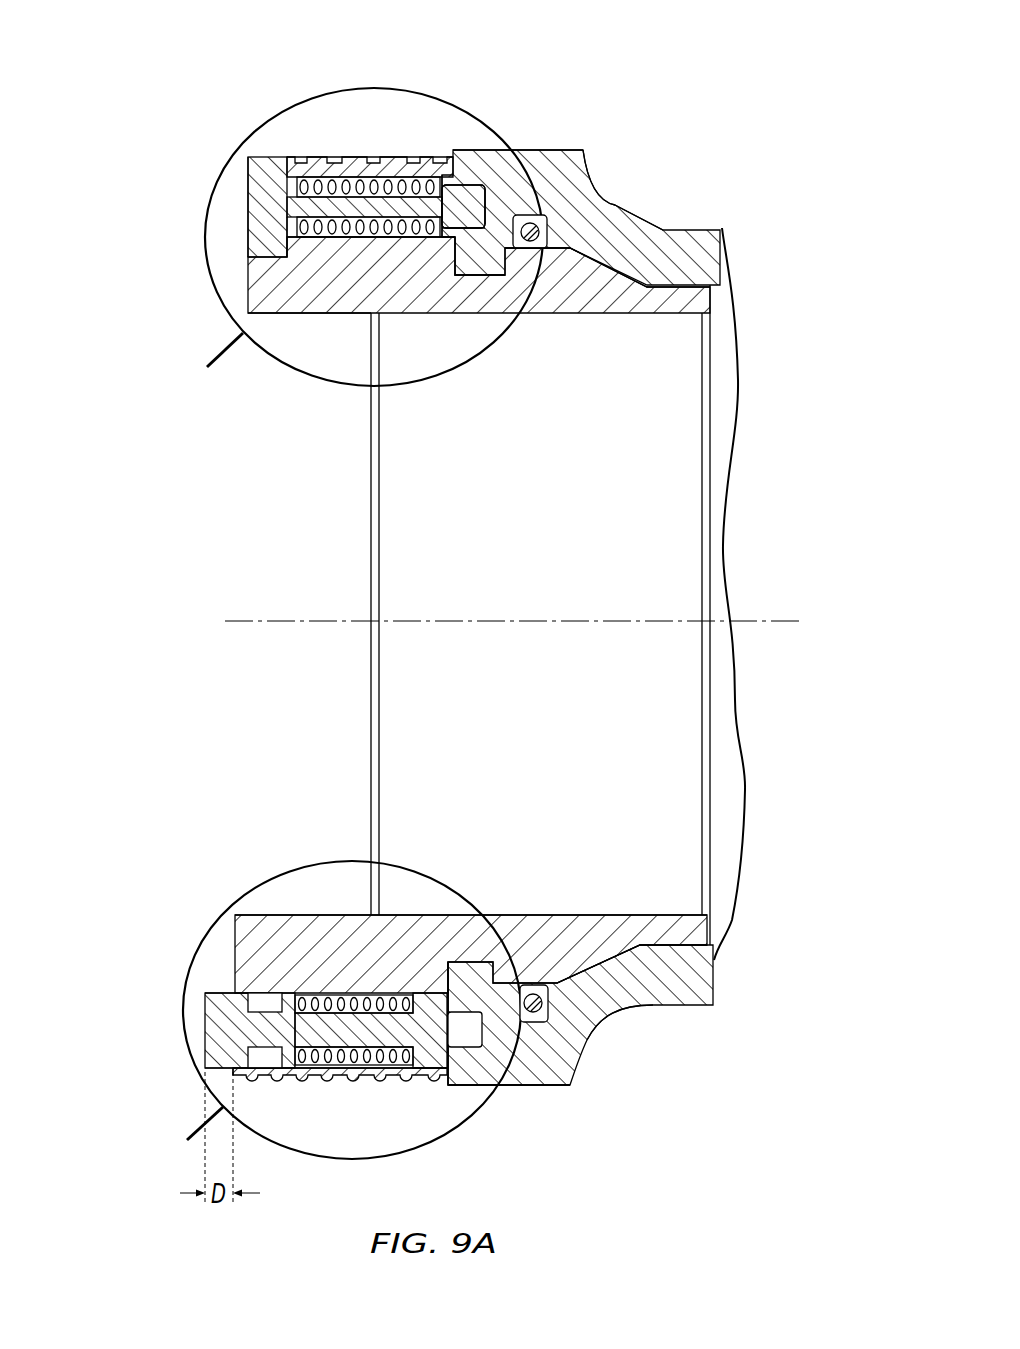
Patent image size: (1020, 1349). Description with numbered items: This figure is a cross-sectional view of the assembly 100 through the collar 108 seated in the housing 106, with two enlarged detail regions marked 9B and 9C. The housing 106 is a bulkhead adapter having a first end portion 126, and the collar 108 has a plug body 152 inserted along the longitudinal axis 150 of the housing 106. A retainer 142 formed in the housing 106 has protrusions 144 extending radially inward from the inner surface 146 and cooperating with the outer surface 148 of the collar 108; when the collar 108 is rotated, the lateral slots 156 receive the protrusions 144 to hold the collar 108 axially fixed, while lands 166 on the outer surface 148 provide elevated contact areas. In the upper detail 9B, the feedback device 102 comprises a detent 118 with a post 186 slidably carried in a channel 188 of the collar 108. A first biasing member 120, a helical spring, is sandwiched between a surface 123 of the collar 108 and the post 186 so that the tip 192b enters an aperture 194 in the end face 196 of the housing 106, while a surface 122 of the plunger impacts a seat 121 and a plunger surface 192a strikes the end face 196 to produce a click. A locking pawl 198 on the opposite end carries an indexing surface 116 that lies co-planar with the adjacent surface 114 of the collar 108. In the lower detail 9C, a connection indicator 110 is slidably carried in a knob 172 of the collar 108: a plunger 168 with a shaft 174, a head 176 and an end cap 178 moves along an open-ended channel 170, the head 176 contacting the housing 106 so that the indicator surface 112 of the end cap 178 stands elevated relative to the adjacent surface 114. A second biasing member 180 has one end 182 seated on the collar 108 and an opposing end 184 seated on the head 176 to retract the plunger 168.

The assembly 100 is at (115, 78).
The feedback device 102 is at (287, 135).
The housing 106 is at (714, 970).
The collar 108 is at (360, 559).
The connection indicator 110 is at (220, 1080).
The indicator surface 112 is at (205, 1043).
The adjacent surface 114 is at (248, 303).
The indexing surface 116 is at (247, 193).
The detent 118 is at (135, 145).
The first biasing member 120 is at (300, 290).
The seat 121 is at (250, 242).
The surface of the detent plunger 122 is at (247, 232).
The surface of the collar 123 is at (312, 190).
The first end portion 126 is at (459, 146).
The retainer 142 is at (460, 265).
The protrusion 144 is at (503, 285).
The inner surface of the housing 146 is at (560, 295).
The outer surface of the collar 148 is at (612, 210).
The longitudinal axis 150 is at (760, 618).
The plug body 152 is at (668, 278).
The lateral slot 156 is at (532, 224).
The land 166 is at (472, 280).
The plunger 168 is at (249, 990).
The open-ended channel 170 is at (458, 1088).
The knob 172 is at (268, 1078).
The shaft 174 is at (267, 1004).
The head 176 is at (472, 1050).
The end cap 178 is at (205, 998).
The second biasing member 180 is at (380, 1000).
The end of the second biasing member 182 is at (304, 1068).
The opposing end of the second biasing member 184 is at (445, 1022).
The post 186 is at (322, 185).
The channel 188 is at (392, 188).
The plunger surface 192a is at (480, 195).
The tip 192b is at (486, 215).
The aperture 194 is at (355, 270).
The end face of the housing 196 is at (453, 182).
The locking pawl 198 is at (243, 155).
The detail view 9B is at (210, 365).
The detail view 9C is at (191, 1137).